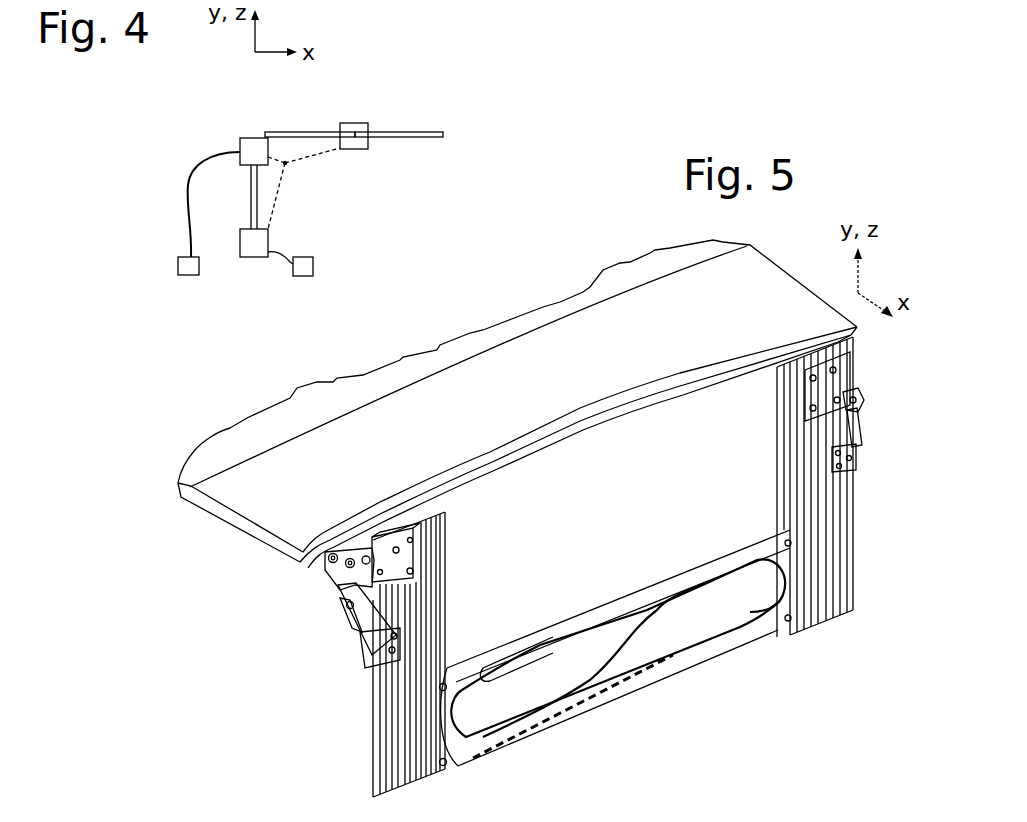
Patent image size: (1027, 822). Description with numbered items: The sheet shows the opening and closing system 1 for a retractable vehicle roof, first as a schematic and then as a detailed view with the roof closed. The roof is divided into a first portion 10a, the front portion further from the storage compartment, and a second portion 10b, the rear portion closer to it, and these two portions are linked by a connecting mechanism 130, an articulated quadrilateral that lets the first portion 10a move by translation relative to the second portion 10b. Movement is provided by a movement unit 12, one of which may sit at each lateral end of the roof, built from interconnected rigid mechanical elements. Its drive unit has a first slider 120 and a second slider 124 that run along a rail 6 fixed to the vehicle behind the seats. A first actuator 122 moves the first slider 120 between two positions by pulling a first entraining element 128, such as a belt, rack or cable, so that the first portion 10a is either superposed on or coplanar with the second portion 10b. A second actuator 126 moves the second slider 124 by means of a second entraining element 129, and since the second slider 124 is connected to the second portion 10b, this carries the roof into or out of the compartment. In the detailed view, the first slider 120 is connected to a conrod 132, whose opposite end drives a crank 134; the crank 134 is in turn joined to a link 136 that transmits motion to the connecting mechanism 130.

In FIG. 4, the opening and closing system 1 is at (276, 211).
In FIG. 5, the opening and closing system 1 is at (512, 512).
In FIG. 4, the rail 6 is at (250, 203).
In FIG. 4, the first portion 10a is at (428, 132).
In FIG. 5, the first portion 10a is at (631, 264).
In FIG. 4, the second portion 10b is at (310, 133).
In FIG. 5, the second portion 10b is at (733, 296).
In FIG. 4, the movement unit 12 is at (150, 202).
In FIG. 4, the first slider 120 is at (247, 245).
In FIG. 5, the first slider 120 is at (390, 670).
In FIG. 4, the first actuator 122 is at (313, 268).
In FIG. 4, the second slider 124 is at (252, 143).
In FIG. 5, the second slider 124 is at (403, 563).
In FIG. 4, the second actuator 126 is at (178, 264).
In FIG. 4, the first entraining element 128 is at (280, 252).
In FIG. 4, the second entraining element 129 is at (190, 210).
In FIG. 4, the connecting mechanism 130 is at (364, 128).
In FIG. 5, the conrod 132 is at (363, 630).
In FIG. 5, the crank 134 is at (340, 603).
In FIG. 5, the link 136 is at (312, 588).